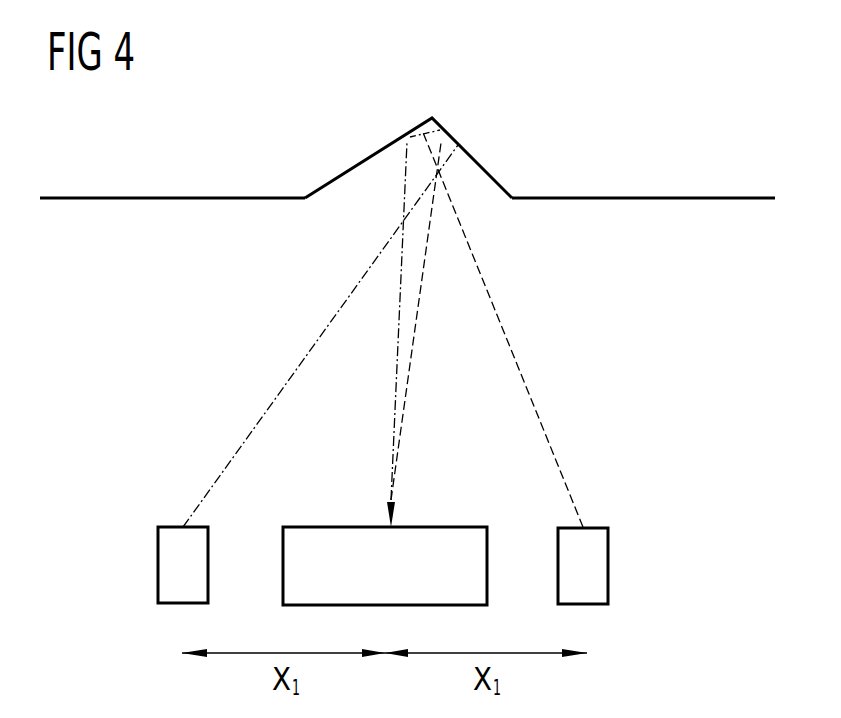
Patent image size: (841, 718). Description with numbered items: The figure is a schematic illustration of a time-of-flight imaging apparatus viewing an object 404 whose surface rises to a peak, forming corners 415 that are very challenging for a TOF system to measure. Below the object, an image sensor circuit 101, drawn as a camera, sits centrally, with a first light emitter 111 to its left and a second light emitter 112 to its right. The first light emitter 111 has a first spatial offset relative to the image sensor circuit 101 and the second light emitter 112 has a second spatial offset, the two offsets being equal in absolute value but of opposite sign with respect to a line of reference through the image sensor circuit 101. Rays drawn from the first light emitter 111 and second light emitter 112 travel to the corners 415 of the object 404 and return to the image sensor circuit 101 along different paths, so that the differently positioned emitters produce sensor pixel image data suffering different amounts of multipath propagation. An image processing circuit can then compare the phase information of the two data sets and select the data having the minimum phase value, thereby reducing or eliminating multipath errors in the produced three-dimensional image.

The object 404 is at (656, 196).
The corners 415 is at (433, 116).
The image sensor circuit 101 is at (452, 526).
The first light emitter 111 is at (181, 605).
The second light emitter 112 is at (583, 605).